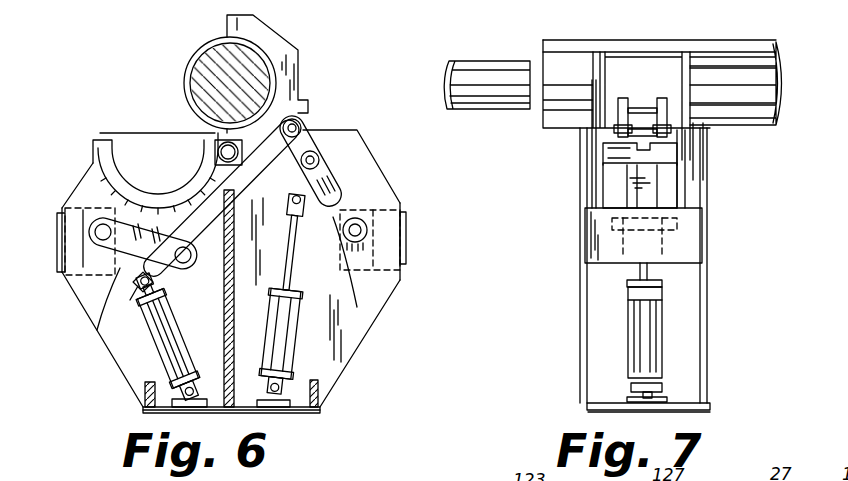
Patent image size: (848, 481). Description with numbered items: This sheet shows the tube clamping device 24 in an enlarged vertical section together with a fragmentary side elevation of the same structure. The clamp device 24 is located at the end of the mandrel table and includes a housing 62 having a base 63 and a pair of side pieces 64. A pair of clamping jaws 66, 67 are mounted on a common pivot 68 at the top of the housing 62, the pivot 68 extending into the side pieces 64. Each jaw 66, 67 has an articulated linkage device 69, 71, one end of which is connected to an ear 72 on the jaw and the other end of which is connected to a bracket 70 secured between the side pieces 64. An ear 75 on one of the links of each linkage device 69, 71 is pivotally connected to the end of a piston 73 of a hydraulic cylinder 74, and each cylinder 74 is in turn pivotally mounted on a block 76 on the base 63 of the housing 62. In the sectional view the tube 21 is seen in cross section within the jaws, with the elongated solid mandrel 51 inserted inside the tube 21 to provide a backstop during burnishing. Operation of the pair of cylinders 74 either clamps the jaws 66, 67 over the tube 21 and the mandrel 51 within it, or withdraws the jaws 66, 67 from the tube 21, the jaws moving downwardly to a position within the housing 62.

In FIG. 6, the tube 21 is at (205, 52).
In FIG. 7, the tube 21 is at (572, 48).
In FIG. 6, the tube clamping device 24 is at (98, 357).
In FIG. 7, the tube clamping device 24 is at (559, 299).
In FIG. 6, the mandrel 51 is at (207, 66).
In FIG. 7, the mandrel 51 is at (483, 73).
In FIG. 7, the housing 62 is at (581, 342).
In FIG. 6, the base 63 is at (300, 413).
In FIG. 7, the base 63 is at (605, 407).
In FIG. 6, the side pieces 64 is at (340, 347).
In FIG. 7, the side pieces 64 is at (587, 273).
In FIG. 6, the clamping jaw 66 is at (100, 152).
In FIG. 7, the clamping jaw 66 is at (680, 188).
In FIG. 6, the clamping jaw 67 is at (293, 50).
In FIG. 7, the clamping jaw 67 is at (650, 67).
In FIG. 6, the common pivot 68 is at (215, 142).
In FIG. 7, the common pivot 68 is at (615, 153).
In FIG. 6, the articulated linkage device 69 is at (188, 265).
In FIG. 7, the articulated linkage device 69 is at (645, 133).
In FIG. 6, the bracket 70 is at (70, 237).
In FIG. 7, the bracket 70 is at (597, 242).
In FIG. 6, the articulated linkage device 71 is at (352, 168).
In FIG. 7, the articulated linkage device 71 is at (638, 180).
In FIG. 6, the ear 72 is at (298, 122).
In FIG. 7, the ear 72 is at (620, 112).
In FIG. 6, the piston 73 is at (135, 290).
In FIG. 7, the piston 73 is at (650, 272).
In FIG. 6, the hydraulic cylinder 74 is at (163, 343).
In FIG. 7, the hydraulic cylinder 74 is at (657, 360).
In FIG. 6, the ear 75 is at (110, 287).
In FIG. 6, the block 76 is at (193, 398).
In FIG. 7, the block 76 is at (647, 400).